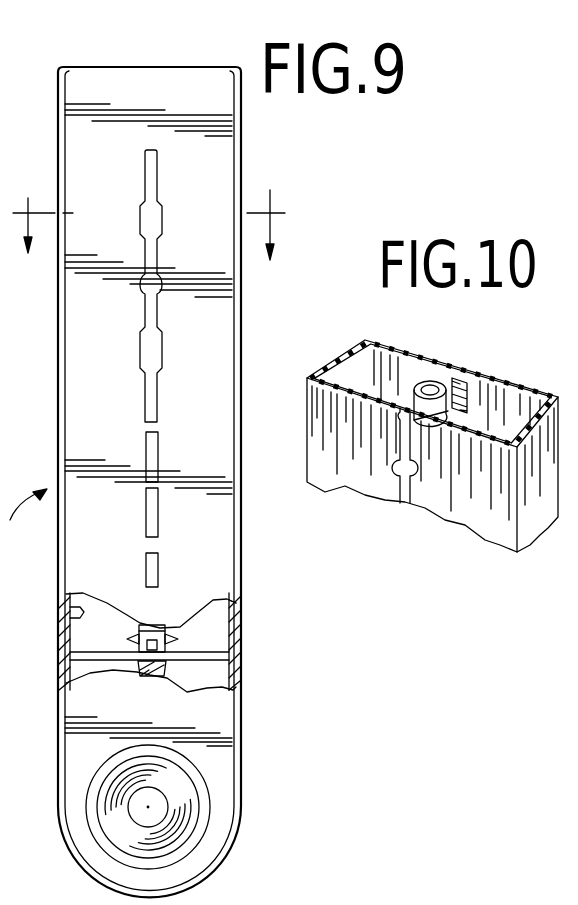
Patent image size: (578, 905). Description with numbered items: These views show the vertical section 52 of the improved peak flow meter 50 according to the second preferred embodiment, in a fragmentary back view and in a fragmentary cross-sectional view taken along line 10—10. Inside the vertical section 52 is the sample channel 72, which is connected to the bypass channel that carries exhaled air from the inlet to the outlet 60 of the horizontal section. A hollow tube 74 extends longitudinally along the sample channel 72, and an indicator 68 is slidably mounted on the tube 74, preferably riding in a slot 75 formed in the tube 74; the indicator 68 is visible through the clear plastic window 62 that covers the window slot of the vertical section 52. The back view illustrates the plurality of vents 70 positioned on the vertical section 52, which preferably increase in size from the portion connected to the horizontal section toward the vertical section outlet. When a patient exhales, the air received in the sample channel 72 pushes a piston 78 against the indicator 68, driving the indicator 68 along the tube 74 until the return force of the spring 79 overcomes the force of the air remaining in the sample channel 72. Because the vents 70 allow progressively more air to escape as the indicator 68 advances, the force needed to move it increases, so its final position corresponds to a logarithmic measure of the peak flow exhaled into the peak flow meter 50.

In FIG. 9, the section line 10— 10 is at (156, 216).
In FIG. 9, the peak flow meter 50 is at (23, 520).
In FIG. 9, the vertical section 52 is at (88, 430).
In FIG. 9, the outlet 60 is at (168, 805).
In FIG. 10, the window 62 is at (445, 383).
In FIG. 9, the indicator 68 is at (237, 628).
In FIG. 9, the vents 70 is at (150, 358).
In FIG. 10, the vents 70 is at (400, 463).
In FIG. 9, the sample channel 72 is at (68, 617).
In FIG. 10, the sample channel 72 is at (515, 415).
In FIG. 9, the hollow tube 74 is at (147, 624).
In FIG. 10, the hollow tube 74 is at (450, 392).
In FIG. 10, the slot 75 is at (442, 389).
In FIG. 9, the piston 78 is at (203, 650).
In FIG. 9, the spring 79 is at (233, 670).